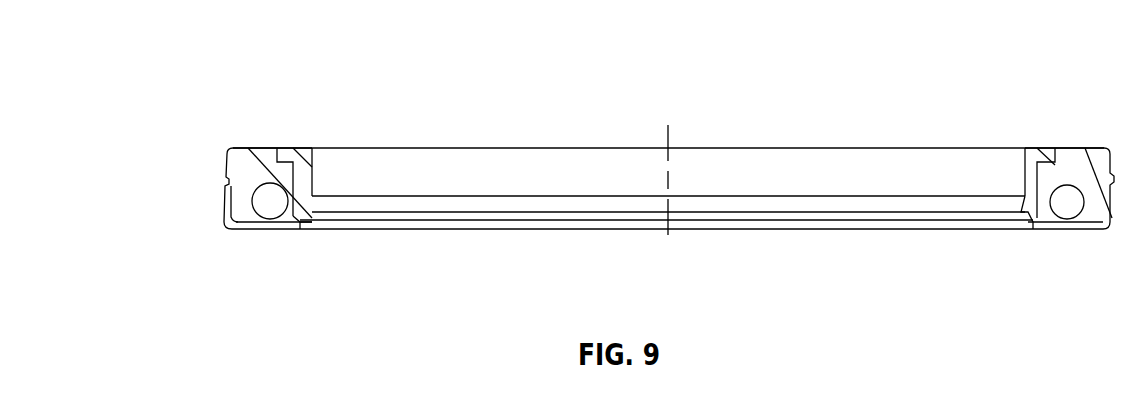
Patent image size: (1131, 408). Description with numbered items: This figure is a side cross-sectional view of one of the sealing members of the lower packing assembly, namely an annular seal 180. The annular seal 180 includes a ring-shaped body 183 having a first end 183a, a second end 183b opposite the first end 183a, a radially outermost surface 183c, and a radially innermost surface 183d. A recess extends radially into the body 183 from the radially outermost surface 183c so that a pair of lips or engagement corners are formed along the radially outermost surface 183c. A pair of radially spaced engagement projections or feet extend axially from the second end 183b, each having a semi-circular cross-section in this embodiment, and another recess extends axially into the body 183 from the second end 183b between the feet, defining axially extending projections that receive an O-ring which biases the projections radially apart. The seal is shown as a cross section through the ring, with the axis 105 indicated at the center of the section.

The annular seal 180 is at (838, 48).
The centerline / axis 105 is at (669, 131).
The ring-shaped body 183 is at (584, 182).
The first end 183a is at (262, 148).
The second end 183b is at (267, 235).
The radially outermost surface 183c is at (222, 157).
The radially innermost surface 183d is at (320, 215).